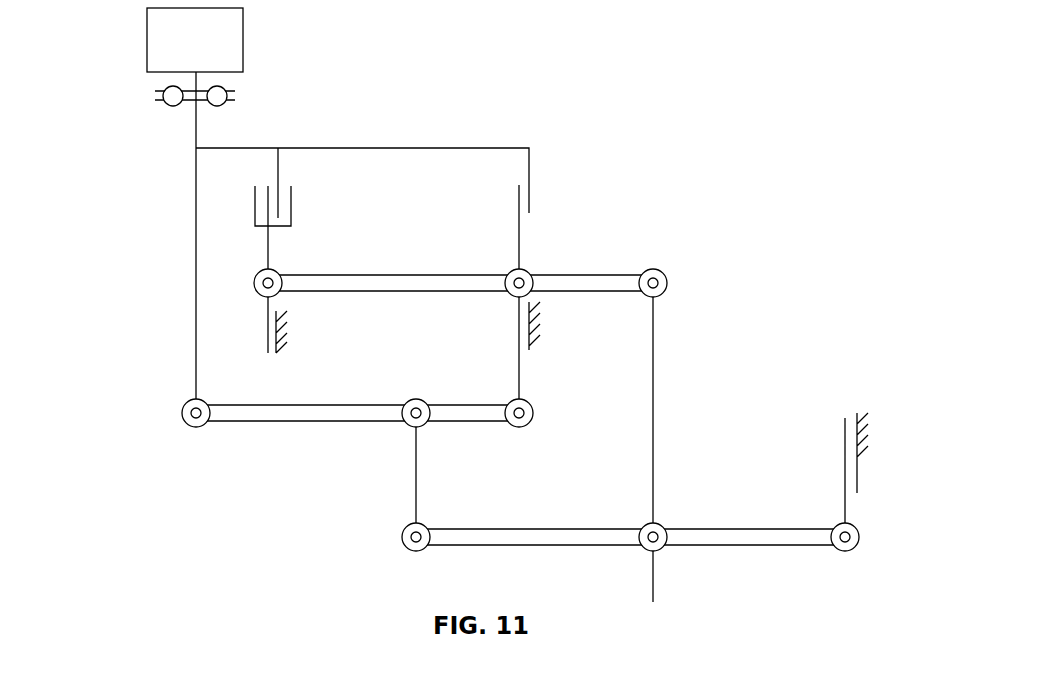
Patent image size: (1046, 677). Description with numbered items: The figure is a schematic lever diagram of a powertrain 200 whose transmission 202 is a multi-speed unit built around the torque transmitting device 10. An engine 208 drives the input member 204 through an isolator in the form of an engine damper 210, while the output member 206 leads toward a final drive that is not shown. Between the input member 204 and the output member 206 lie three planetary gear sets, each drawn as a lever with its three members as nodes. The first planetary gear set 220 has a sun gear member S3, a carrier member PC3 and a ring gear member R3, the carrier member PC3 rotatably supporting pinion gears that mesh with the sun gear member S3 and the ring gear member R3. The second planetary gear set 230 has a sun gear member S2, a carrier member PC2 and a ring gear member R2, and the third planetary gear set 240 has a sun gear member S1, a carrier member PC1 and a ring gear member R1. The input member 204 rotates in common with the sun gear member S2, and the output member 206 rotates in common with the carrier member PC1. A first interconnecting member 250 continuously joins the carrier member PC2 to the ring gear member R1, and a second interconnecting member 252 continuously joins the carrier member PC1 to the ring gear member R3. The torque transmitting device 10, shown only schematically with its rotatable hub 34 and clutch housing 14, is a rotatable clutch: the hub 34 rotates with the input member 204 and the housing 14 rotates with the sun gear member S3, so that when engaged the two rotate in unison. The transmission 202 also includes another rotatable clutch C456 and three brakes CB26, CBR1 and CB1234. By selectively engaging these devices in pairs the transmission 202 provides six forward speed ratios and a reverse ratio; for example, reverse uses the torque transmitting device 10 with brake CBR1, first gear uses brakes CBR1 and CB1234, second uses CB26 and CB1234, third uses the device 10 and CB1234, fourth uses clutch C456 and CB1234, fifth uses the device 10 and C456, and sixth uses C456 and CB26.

The powertrain 200 is at (762, 62).
The transmission 202 is at (135, 343).
The input member 204 is at (193, 114).
The output member 206 is at (657, 584).
The engine 208 is at (147, 43).
The engine damper 210 is at (236, 96).
The torque transmitting device 10 is at (300, 208).
The clutch housing 14 is at (255, 198).
The rotatable hub 34 is at (280, 153).
The first planetary gear set 220 is at (593, 264).
The second planetary gear set 230 is at (270, 449).
The third planetary gear set 240 is at (522, 560).
The first interconnecting member 250 is at (418, 485).
The second interconnecting member 252 is at (656, 400).
The sun gear member S1 is at (850, 552).
The sun gear member S2 is at (183, 423).
The sun gear member S3 is at (256, 279).
The ring gear member R1 is at (404, 547).
The ring gear member R2 is at (530, 423).
The ring gear member R3 is at (667, 275).
The carrier member PC1 is at (665, 526).
The carrier member PC2 is at (405, 424).
The carrier member PC3 is at (507, 293).
The clutch C456 is at (518, 180).
The brake CB26 is at (274, 365).
The brake CBR1 is at (526, 362).
The brake CB1234 is at (851, 409).